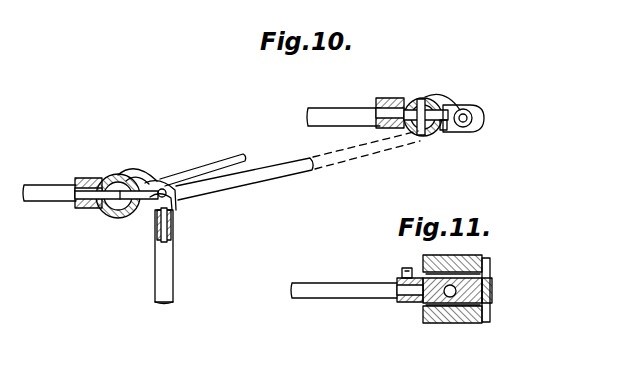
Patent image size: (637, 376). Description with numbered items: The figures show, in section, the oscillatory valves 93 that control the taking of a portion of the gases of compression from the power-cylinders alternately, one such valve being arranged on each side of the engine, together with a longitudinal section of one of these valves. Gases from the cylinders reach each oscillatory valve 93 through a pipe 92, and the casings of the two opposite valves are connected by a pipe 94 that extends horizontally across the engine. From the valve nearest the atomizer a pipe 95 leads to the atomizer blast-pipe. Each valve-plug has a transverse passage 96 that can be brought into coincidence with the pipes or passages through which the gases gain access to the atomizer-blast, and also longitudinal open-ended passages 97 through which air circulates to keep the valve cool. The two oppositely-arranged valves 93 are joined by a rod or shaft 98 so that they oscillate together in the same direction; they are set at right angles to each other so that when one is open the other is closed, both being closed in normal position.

In FIG. 10, the pipe 92 is at (46, 194).
In FIG. 10, the oscillatory valve 93 is at (134, 168).
In FIG. 11, the oscillatory valve 93 is at (462, 323).
In FIG. 10, the pipe 94 is at (256, 175).
In FIG. 10, the pipe 95 is at (173, 266).
In FIG. 10, the transverse passage 96 is at (108, 206).
In FIG. 11, the transverse passage 96 is at (492, 290).
In FIG. 10, the longitudinal open-ended passage 97 is at (108, 178).
In FIG. 11, the longitudinal open-ended passage 97 is at (478, 278).
In FIG. 10, the rod or shaft 98 is at (212, 170).
In FIG. 11, the rod or shaft 98 is at (350, 288).